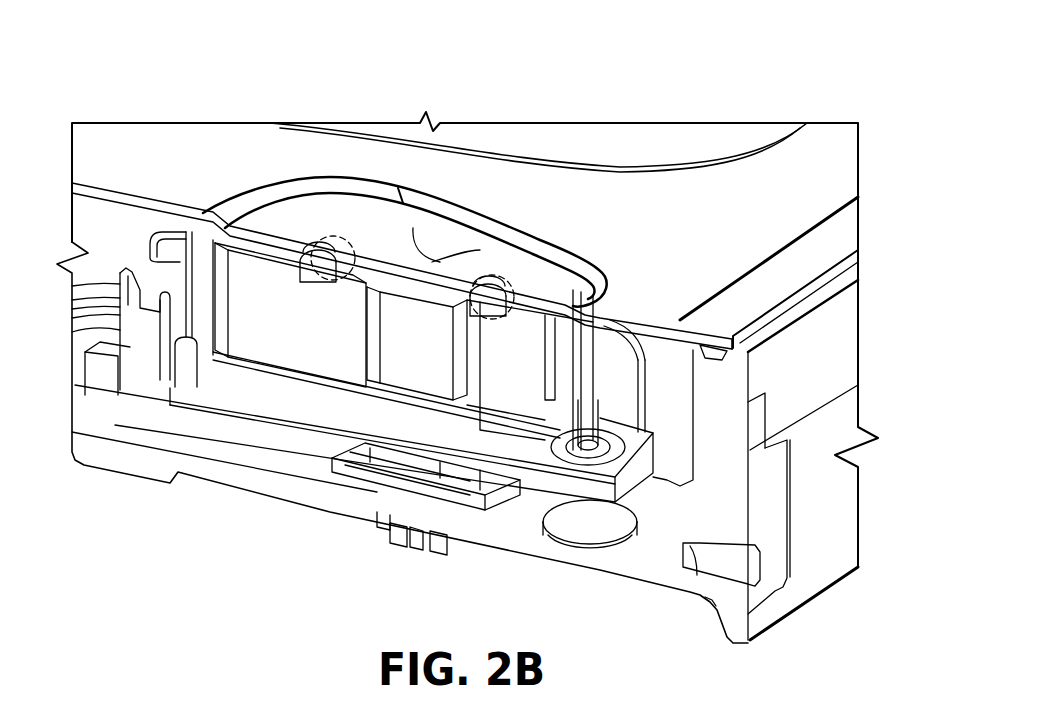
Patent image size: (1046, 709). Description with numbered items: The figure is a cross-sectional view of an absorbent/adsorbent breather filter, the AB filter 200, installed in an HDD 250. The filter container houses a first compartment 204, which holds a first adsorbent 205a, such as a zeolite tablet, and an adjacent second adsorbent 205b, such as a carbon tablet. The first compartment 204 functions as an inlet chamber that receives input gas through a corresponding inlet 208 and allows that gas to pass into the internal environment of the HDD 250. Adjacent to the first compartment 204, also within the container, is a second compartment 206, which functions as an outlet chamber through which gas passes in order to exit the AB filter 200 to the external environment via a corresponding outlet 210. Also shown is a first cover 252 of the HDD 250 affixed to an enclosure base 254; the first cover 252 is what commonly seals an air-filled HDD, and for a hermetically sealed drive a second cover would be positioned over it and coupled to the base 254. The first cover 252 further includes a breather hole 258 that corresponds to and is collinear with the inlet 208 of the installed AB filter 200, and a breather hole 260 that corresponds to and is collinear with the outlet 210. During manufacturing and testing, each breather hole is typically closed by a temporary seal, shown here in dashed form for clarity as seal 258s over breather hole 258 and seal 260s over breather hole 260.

The AB filter 200 is at (362, 391).
The first compartment 204 is at (220, 293).
The first adsorbent 205a is at (290, 315).
The second adsorbent 205b is at (417, 343).
The second compartment 206 is at (530, 408).
The inlet 208 is at (333, 237).
The outlet 210 is at (497, 298).
The HDD 250 is at (833, 358).
The first cover 252 is at (820, 173).
The enclosure base 254 is at (823, 567).
The breather hole 258 is at (333, 240).
The seal 258s is at (358, 242).
The breather hole 260 is at (501, 278).
The seal 260s is at (526, 283).